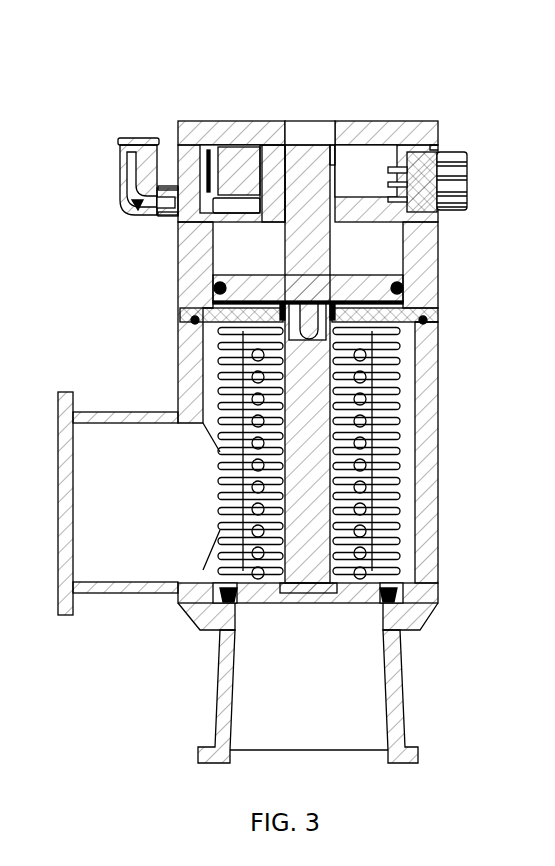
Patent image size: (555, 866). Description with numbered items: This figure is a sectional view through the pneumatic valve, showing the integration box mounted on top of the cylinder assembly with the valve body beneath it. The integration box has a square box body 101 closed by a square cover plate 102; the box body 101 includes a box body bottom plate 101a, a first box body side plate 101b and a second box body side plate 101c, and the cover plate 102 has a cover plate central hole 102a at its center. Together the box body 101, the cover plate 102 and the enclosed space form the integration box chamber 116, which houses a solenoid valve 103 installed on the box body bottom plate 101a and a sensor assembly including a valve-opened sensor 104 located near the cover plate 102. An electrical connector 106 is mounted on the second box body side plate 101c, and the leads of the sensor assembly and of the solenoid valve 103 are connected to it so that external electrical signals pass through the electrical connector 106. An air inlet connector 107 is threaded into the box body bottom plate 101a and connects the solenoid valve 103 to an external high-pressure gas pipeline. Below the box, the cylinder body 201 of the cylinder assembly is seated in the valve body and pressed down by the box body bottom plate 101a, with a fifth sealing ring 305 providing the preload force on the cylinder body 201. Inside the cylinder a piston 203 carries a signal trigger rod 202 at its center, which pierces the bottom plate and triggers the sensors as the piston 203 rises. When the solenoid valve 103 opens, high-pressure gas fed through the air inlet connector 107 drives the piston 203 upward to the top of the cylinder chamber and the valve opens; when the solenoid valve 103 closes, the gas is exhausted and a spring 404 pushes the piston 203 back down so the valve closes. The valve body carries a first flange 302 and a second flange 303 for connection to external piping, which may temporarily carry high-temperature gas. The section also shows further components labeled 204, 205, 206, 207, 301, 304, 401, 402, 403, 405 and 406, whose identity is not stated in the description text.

The box body 101 is at (190, 160).
The box body bottom plate 101a is at (355, 215).
The first box body side plate 101b is at (130, 210).
The second box body side plate 101c is at (441, 135).
The cover plate 102 is at (257, 127).
The cover plate central hole 102a is at (305, 128).
The solenoid valve 103 is at (233, 167).
The valve-opened sensor 104 is at (283, 143).
The electrical connector 106 is at (443, 147).
The air inlet connector 107 is at (140, 173).
The integration box chamber 116 is at (352, 160).
The cylinder body 201 is at (422, 238).
The signal trigger rod 202 is at (317, 255).
The piston 203 is at (400, 293).
The guide ring 204 is at (420, 318).
The O-ring seal 205 is at (215, 286).
The sealing ring 206 is at (213, 303).
The spring stack 207 is at (225, 357).
The lower housing 301 is at (412, 477).
The first flange 302 is at (333, 698).
The second flange 303 is at (117, 507).
The O-ring 304 is at (398, 596).
The fifth sealing ring 305 is at (432, 332).
The valve disc 401 is at (265, 593).
The sealing ring 402 is at (220, 530).
The valve seat 403 is at (311, 572).
The spring 404 is at (220, 477).
The spring stack 405 is at (345, 576).
The guide ring 406 is at (195, 322).